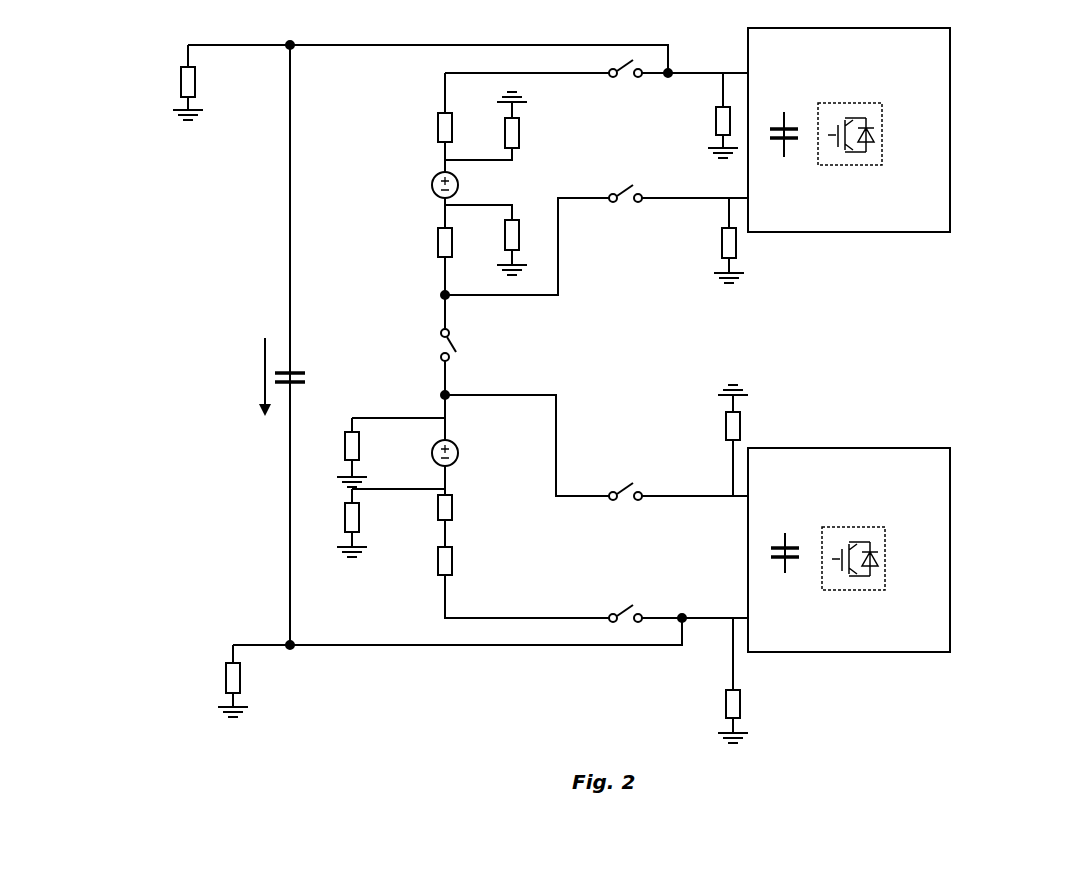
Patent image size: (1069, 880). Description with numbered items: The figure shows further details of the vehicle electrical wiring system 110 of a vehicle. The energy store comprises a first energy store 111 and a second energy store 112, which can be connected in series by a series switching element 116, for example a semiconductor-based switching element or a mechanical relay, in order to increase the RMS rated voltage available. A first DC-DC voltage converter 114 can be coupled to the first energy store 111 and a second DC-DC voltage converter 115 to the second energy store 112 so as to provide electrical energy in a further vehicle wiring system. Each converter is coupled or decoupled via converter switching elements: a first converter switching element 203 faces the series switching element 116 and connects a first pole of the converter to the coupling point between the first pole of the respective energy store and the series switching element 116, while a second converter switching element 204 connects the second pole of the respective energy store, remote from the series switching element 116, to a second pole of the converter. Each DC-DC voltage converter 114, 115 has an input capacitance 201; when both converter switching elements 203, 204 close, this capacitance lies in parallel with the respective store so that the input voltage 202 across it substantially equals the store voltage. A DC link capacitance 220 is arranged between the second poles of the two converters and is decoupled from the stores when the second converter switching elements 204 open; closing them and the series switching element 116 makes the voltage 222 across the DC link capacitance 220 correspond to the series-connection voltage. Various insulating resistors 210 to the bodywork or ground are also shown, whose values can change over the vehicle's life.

The vehicle wiring system 110 is at (253, 195).
The first energy store 111 is at (433, 182).
The second energy store 112 is at (458, 456).
The first DC-DC voltage converter 114 is at (950, 147).
The second DC-DC voltage converter 115 is at (950, 553).
The series switching element 116 is at (457, 352).
The input capacitance 201 is at (784, 112).
The input voltage 202 is at (803, 162).
The first converter switching element 203 is at (625, 204).
The second converter switching element 204 is at (628, 78).
The insulating resistor 210 is at (178, 80).
The DC link capacitance 220 is at (307, 377).
The voltage across the DC link capacitance 222 is at (258, 377).